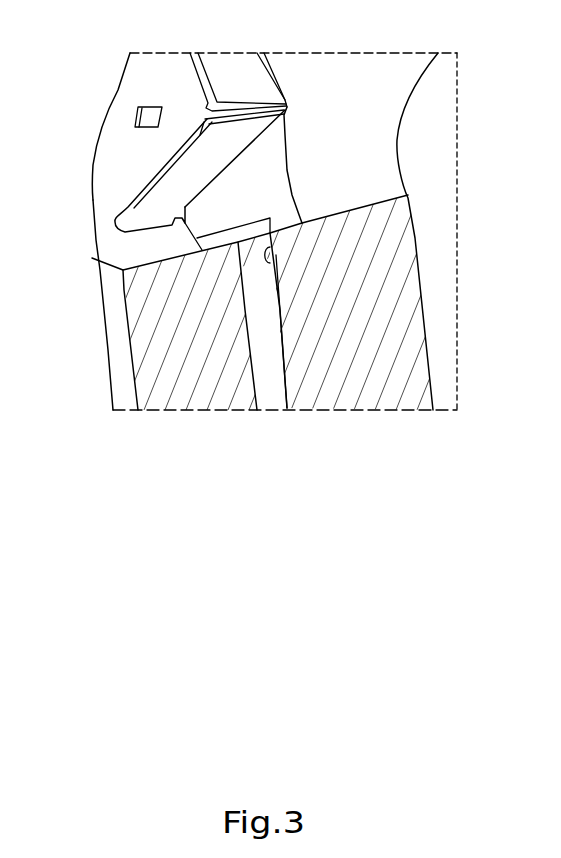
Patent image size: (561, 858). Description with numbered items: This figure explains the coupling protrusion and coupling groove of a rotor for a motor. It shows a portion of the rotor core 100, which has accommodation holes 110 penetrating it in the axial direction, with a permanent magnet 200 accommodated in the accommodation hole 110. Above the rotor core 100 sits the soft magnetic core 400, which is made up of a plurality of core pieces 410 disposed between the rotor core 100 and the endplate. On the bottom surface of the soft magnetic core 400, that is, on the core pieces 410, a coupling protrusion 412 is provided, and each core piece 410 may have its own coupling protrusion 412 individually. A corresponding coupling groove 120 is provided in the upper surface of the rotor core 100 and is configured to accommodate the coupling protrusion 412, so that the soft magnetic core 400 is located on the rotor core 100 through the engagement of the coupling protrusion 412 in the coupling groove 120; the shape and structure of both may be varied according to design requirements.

The rotor core 100 is at (158, 351).
The accommodation hole 110 is at (184, 137).
The coupling groove 120 is at (242, 267).
The permanent magnet 200 is at (212, 170).
The soft magnetic core 400 is at (298, 157).
The core piece 410 is at (226, 193).
The coupling protrusion 412 is at (128, 298).